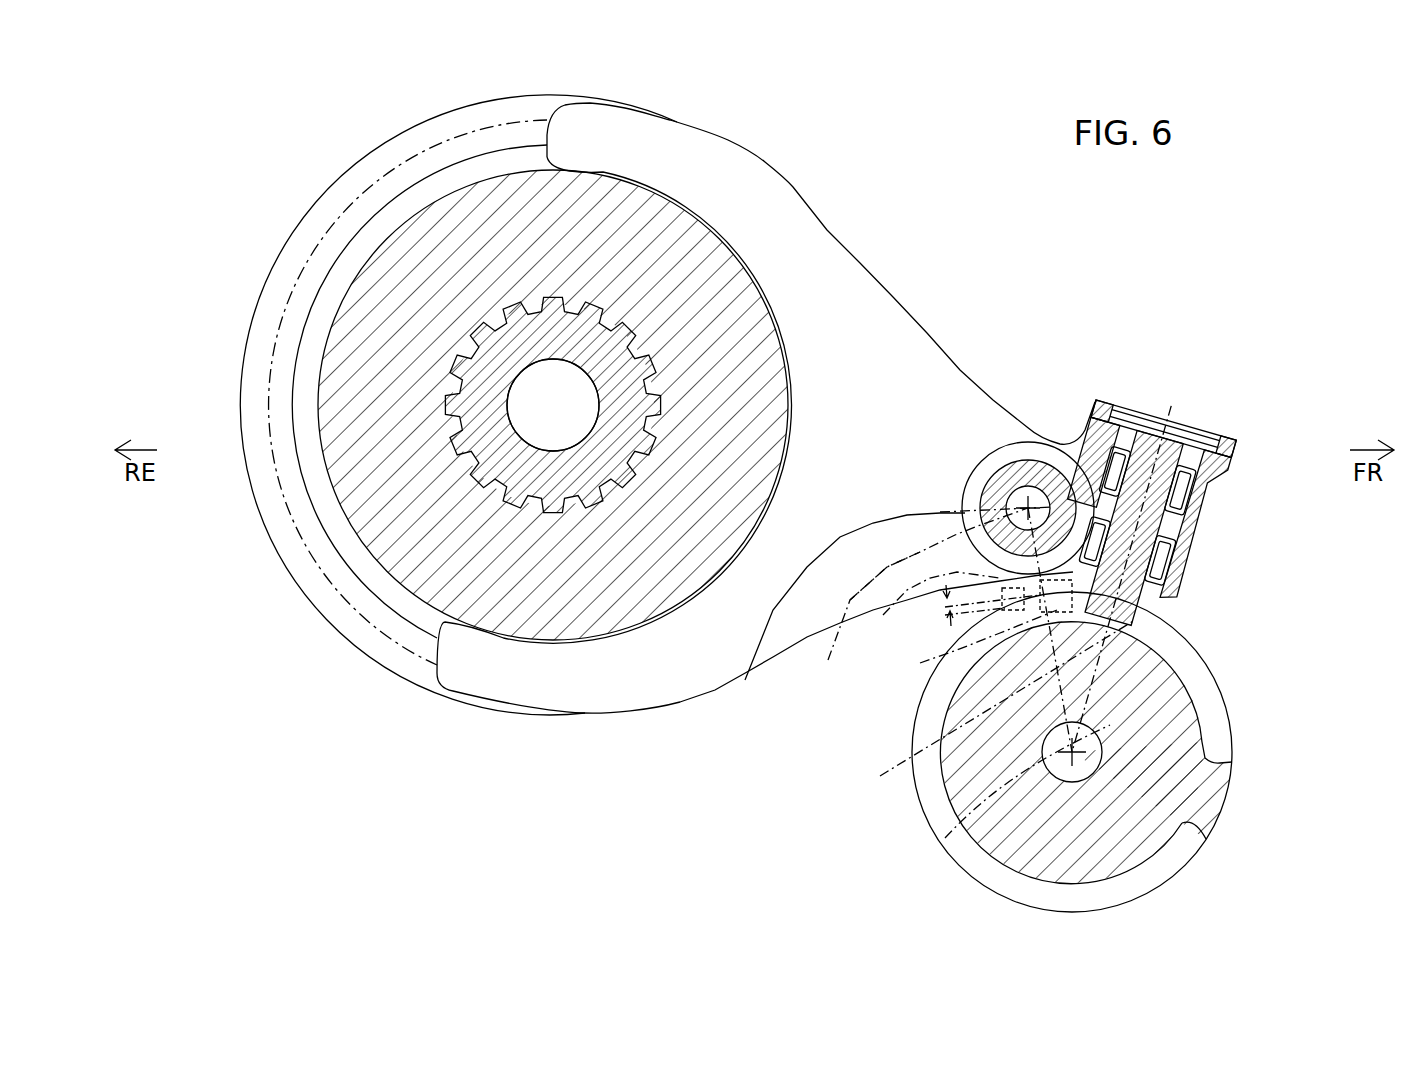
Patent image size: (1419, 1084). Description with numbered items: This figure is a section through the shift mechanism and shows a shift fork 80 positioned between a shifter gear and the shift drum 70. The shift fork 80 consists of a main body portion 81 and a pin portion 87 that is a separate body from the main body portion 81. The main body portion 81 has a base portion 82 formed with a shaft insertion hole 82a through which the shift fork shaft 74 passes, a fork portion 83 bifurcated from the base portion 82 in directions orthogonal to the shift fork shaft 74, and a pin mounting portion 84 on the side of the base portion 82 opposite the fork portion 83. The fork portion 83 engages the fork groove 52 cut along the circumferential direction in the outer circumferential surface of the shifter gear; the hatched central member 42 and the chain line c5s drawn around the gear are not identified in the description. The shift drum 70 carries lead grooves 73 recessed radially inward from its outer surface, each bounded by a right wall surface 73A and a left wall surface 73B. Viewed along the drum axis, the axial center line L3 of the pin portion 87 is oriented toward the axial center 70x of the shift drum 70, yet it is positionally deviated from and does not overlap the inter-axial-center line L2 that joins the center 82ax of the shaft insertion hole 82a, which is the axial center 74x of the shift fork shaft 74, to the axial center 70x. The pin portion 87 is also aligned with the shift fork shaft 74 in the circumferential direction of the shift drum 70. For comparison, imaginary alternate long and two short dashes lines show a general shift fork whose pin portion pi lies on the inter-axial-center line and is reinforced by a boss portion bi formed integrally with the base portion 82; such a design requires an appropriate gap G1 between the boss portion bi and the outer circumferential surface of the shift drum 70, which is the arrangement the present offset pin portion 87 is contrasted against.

The fork groove 52 is at (365, 233).
The gear 42 is at (500, 405).
The center line of ring c5s is at (345, 602).
The shift fork shaft 74 is at (748, 674).
The axial center of the shift fork shaft 74x is at (916, 598).
The center of the shaft insertion hole 82ax is at (854, 632).
The boss portion bi is at (933, 611).
The pin portion pi is at (974, 642).
The gap G1 is at (990, 606).
The base portion 82 is at (1057, 452).
The shaft insertion hole 82a is at (983, 460).
The shift fork 80 is at (1075, 258).
The main body portion 81 is at (1162, 301).
The fork portion 83 is at (960, 394).
The pin mounting portion 84 is at (1082, 415).
The pin portion 87 is at (1147, 452).
The axial center line of the pin portion L3 is at (1185, 425).
The shift drum 70 is at (1195, 793).
The lead groove 73 is at (1218, 686).
The right wall surface 73A is at (1182, 658).
The left wall surface 73B is at (1170, 630).
The inter-axial-center line L2 is at (988, 705).
The axial center of the shift drum 70x is at (935, 841).